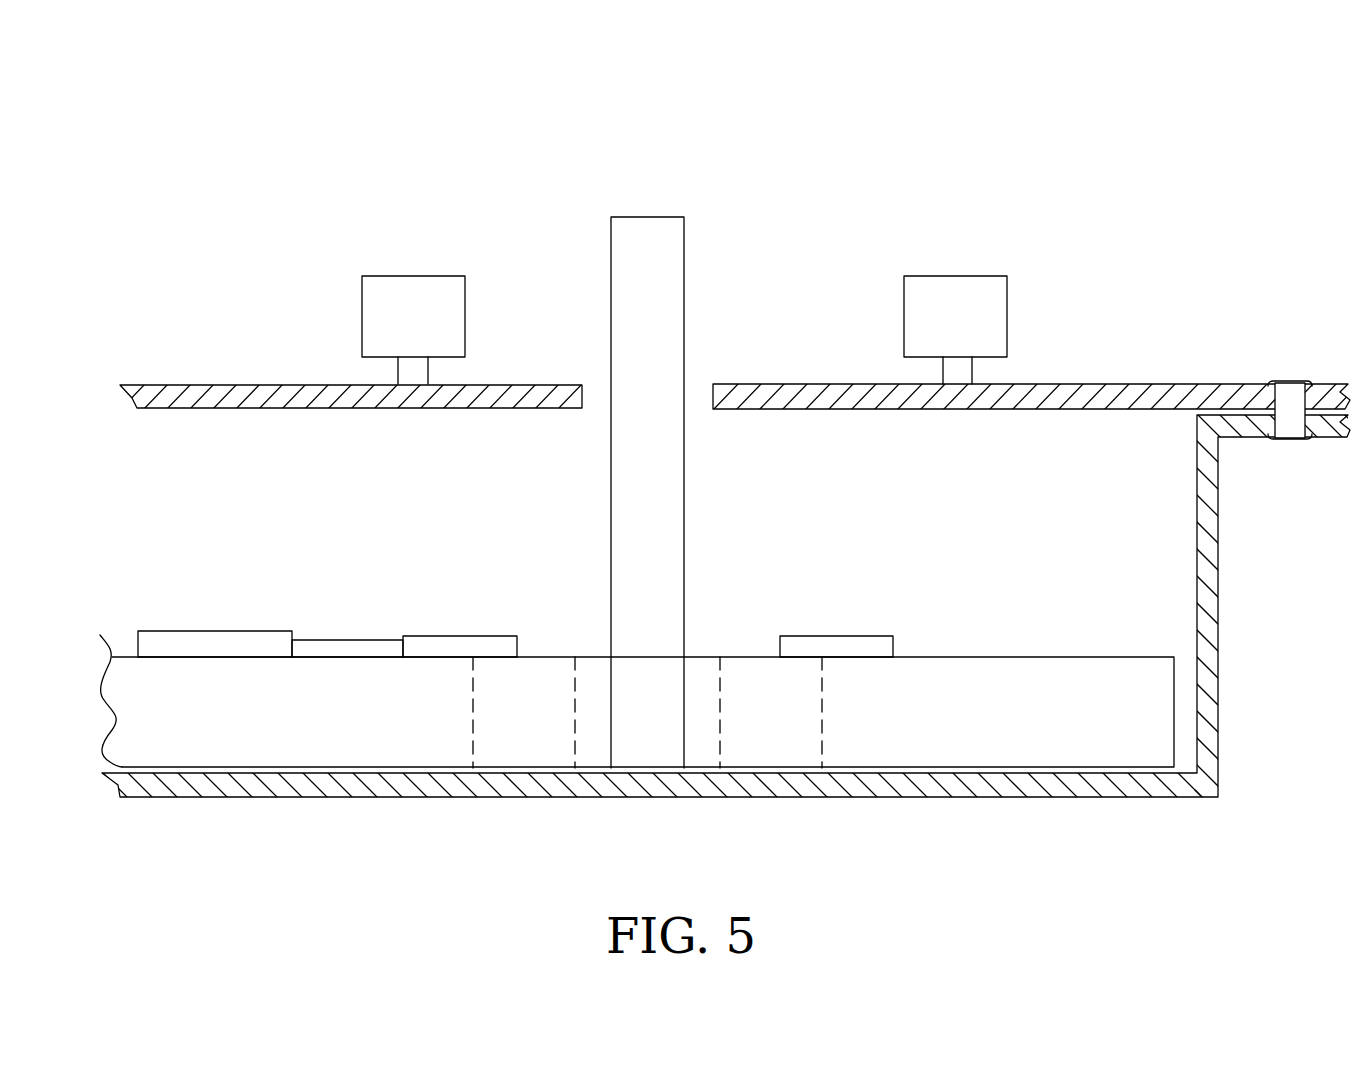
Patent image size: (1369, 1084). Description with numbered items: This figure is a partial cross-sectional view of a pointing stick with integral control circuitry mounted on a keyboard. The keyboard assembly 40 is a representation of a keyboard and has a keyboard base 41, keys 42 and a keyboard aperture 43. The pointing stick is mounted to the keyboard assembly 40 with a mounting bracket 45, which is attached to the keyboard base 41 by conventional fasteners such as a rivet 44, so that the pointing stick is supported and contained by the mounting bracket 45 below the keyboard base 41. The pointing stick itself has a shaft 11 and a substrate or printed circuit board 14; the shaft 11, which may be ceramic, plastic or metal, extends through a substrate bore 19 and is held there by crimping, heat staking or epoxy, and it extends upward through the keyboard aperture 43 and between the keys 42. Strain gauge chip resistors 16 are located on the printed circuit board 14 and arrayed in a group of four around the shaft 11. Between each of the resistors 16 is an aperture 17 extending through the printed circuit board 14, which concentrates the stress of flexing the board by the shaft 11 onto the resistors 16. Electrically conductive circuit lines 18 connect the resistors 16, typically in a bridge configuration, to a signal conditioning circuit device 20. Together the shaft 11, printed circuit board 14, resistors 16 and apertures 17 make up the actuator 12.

The shaft 11 is at (610, 277).
The actuator 12 is at (598, 333).
The printed circuit board 14 is at (250, 728).
The strain gauge chip resistors 16 is at (470, 636).
The aperture 17 is at (770, 737).
The electrically conductive circuit lines 18 is at (355, 640).
The substrate bore 19 is at (652, 732).
The signal conditioning circuit device 20 is at (250, 630).
The keyboard assembly 40 is at (1050, 225).
The keyboard base 41 is at (232, 384).
The keys 42 is at (362, 318).
The keyboard aperture 43 is at (700, 398).
The rivet 44 is at (1292, 438).
The mounting bracket 45 is at (478, 797).